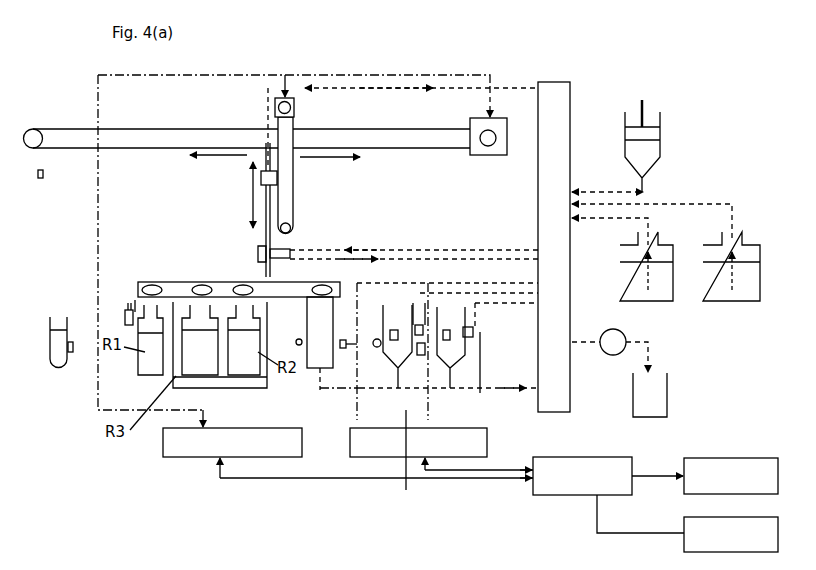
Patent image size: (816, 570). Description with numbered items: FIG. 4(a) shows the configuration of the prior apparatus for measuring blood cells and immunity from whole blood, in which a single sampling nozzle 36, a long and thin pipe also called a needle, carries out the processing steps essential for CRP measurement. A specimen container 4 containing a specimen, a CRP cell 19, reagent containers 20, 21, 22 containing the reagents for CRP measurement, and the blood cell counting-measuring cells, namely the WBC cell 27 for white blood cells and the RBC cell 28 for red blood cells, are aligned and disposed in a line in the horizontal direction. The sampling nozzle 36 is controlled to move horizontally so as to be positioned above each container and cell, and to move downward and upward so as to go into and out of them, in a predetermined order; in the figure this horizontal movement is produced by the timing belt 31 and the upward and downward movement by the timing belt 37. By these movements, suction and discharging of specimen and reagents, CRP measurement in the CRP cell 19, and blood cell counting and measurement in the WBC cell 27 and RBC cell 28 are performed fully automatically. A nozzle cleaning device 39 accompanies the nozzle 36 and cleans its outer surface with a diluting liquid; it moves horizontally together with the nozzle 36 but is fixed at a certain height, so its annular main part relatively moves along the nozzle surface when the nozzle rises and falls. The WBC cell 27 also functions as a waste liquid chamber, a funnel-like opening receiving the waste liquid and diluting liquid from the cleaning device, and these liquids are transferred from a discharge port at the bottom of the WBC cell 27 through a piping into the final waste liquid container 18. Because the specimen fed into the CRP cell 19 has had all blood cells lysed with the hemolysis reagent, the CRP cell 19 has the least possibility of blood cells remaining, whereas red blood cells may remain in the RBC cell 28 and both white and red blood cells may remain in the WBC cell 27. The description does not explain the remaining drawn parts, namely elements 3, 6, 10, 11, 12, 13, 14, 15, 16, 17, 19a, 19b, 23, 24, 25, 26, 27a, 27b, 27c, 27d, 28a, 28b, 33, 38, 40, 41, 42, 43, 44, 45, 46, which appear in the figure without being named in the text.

The blood sample 3 is at (58, 338).
The specimen container 4 is at (49, 325).
The bar code label 6 is at (71, 354).
The reaction container 10 is at (284, 380).
The signal line 11 is at (399, 459).
The control unit 12 is at (570, 90).
The transfer direction 13 is at (237, 178).
The syringe 14 is at (660, 128).
The reagent container 15 is at (673, 275).
The reagent container 16 is at (760, 280).
The pump 17 is at (603, 330).
The final waste liquid container 18 is at (667, 395).
The CRP cell 19 is at (313, 370).
The sensor 19a is at (296, 342).
The sensor 19b is at (343, 338).
The reagent container 20 is at (148, 375).
The reagent container 21 is at (245, 357).
The reagent container 22 is at (208, 365).
The nozzle 23 is at (123, 318).
The tray 24 is at (152, 283).
The rack 25 is at (178, 300).
The bottle holder 26 is at (183, 387).
The WBC cell 27 is at (383, 305).
The dispensing tube 27a is at (420, 325).
The valve 27b is at (396, 329).
The sensor 27c is at (376, 350).
The sensor 27d is at (422, 356).
The RBC cell 28 is at (468, 322).
The valve 28a is at (474, 335).
The valve 28b is at (450, 345).
The timing belt 31 is at (400, 148).
The drive box 33 is at (490, 155).
The sampling nozzle 36 is at (290, 248).
The timing belt 37 is at (293, 185).
The slider 38 is at (262, 172).
The nozzle cleaning device 39 is at (258, 250).
The pulley 40 is at (294, 108).
The stopper 41 is at (40, 180).
The MPU 42 is at (548, 497).
The measuring unit 43 is at (190, 460).
The measuring unit 44 is at (488, 442).
The display 45 is at (740, 458).
The printer 46 is at (760, 517).